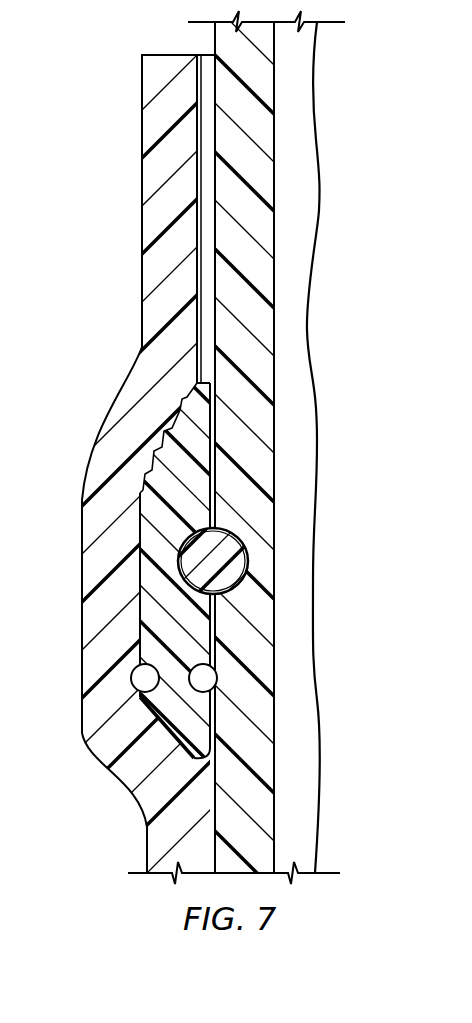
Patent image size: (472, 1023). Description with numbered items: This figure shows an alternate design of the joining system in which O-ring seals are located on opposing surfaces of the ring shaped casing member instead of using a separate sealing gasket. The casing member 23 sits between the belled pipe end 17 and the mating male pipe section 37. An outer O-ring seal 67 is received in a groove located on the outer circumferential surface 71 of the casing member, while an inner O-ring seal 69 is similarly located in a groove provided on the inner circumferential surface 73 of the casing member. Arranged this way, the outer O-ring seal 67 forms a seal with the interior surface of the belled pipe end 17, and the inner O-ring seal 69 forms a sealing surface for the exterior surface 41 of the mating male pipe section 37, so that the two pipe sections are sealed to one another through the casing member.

The belled pipe end 17 is at (131, 230).
The inner member 23 is at (172, 607).
The mating male pipe section 37 is at (257, 363).
The exterior surface 41 is at (222, 198).
The outer O-ring seal 67 is at (133, 672).
The inner O-ring seal 69 is at (192, 692).
The outer circumferential surface 71 is at (193, 531).
The inner circumferential surface 73 is at (207, 421).